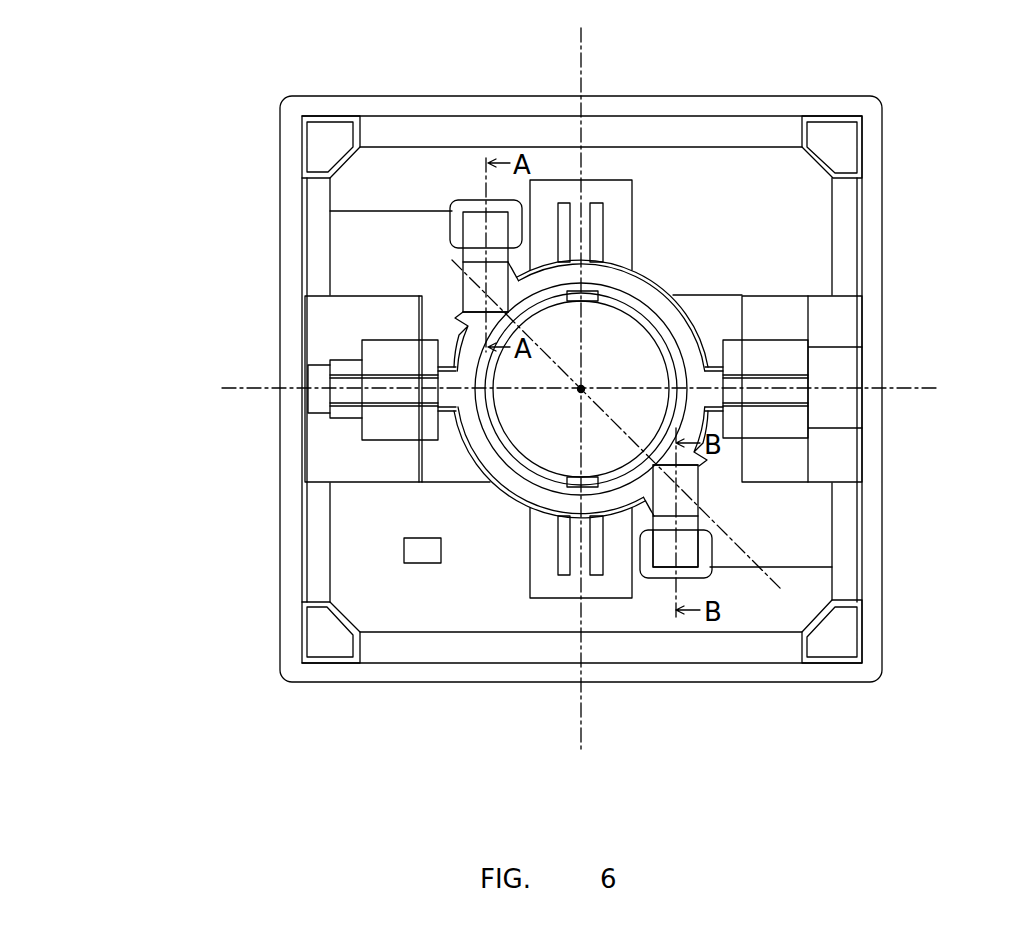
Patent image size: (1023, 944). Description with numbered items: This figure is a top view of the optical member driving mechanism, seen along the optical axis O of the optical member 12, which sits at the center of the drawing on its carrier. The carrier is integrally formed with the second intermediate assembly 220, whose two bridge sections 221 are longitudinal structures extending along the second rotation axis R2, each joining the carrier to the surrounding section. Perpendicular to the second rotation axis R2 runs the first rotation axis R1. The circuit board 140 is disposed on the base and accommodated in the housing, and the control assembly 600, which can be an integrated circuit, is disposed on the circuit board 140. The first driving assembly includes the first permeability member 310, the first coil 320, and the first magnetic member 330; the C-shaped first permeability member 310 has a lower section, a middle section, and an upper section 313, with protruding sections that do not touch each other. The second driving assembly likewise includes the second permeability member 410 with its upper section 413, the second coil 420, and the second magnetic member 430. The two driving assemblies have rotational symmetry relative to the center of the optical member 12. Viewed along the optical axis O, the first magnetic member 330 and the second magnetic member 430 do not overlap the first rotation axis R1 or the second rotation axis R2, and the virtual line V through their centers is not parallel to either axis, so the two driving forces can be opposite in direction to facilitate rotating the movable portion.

The optical member 12 is at (632, 356).
The circuit board 140 is at (330, 508).
The second intermediate assembly 220 is at (622, 178).
The bridge section 221 is at (575, 232).
The first permeability member 310 is at (463, 287).
The upper section 313 is at (478, 257).
The first coil 320 is at (453, 240).
The first magnetic member 330 is at (443, 337).
The second permeability member 410 is at (698, 478).
The upper section 413 is at (687, 487).
The second coil 420 is at (708, 560).
The second magnetic member 430 is at (652, 530).
The control assembly 600 is at (423, 553).
The optical axis O is at (578, 392).
The first rotation axis R1 is at (909, 384).
The second rotation axis R2 is at (582, 48).
The virtual line V is at (785, 586).